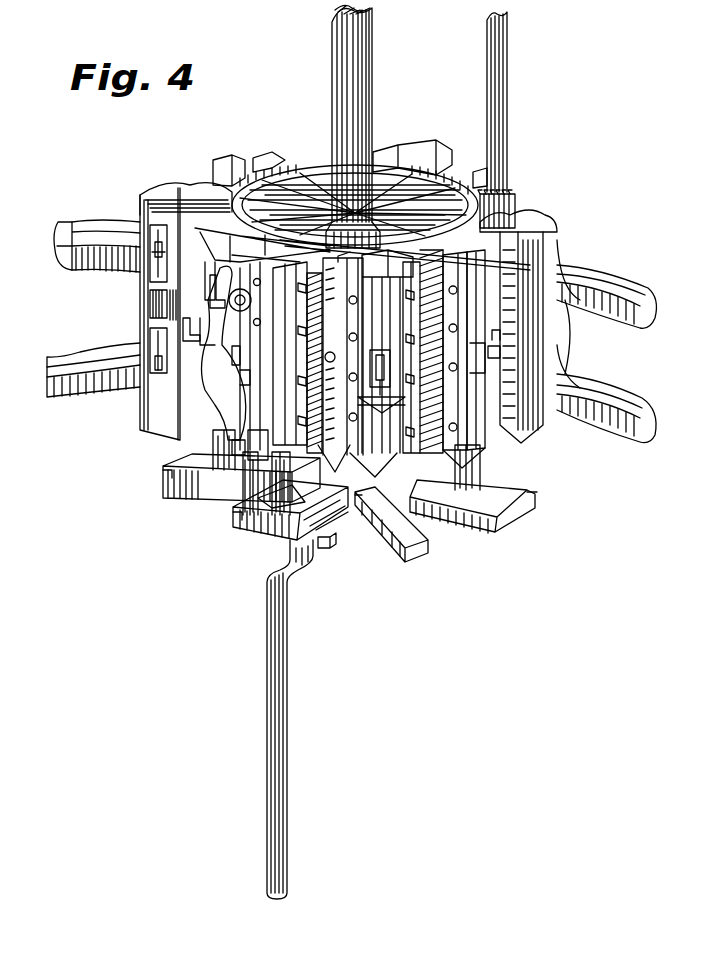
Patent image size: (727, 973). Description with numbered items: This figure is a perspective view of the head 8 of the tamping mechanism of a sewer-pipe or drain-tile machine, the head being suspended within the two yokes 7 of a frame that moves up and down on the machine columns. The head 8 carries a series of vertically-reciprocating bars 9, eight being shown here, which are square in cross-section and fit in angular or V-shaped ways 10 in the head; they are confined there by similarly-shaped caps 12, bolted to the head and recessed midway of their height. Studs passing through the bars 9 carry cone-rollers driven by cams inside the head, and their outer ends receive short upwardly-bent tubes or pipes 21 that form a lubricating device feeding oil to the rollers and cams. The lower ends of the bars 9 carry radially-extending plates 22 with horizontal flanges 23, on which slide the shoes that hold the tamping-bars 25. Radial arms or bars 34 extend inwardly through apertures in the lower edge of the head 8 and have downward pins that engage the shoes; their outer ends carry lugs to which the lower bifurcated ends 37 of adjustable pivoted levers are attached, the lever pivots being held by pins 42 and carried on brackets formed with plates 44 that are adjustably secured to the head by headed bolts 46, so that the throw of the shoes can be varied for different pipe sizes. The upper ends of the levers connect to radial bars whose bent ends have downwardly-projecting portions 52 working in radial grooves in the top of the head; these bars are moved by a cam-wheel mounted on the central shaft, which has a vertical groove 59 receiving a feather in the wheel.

The vertical groove 59 is at (334, 80).
The head 8 is at (380, 152).
The downwardly-projecting portions 52 is at (478, 204).
The angular or V-shaped ways 10 is at (230, 170).
The caps 12 is at (220, 180).
The yokes 7 is at (351, 331).
The plates 44 is at (214, 296).
The upwardly-bent tubes or pipes 21 is at (185, 327).
The headed bolts 46 is at (252, 304).
The pins 42 is at (213, 373).
The lower bifurcated ends 37 is at (236, 446).
The radial arms or bars 34 is at (225, 495).
The vertically-reciprocating bars 9 is at (213, 446).
The radially-extending plates 22 is at (176, 480).
The horizontal flanges 23 is at (170, 470).
The tamping-bars 25 is at (276, 706).